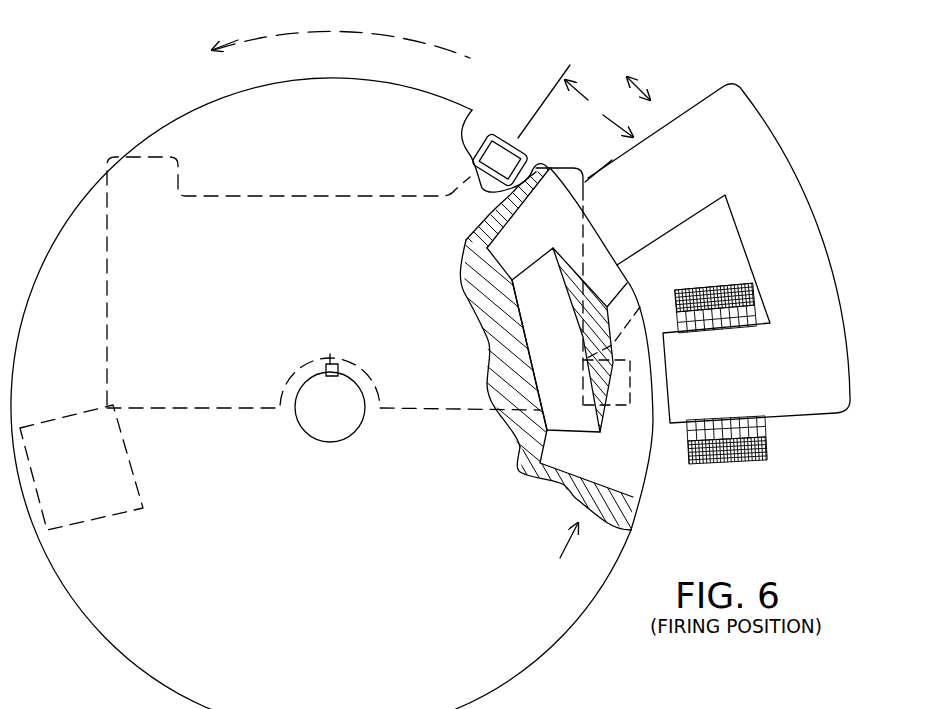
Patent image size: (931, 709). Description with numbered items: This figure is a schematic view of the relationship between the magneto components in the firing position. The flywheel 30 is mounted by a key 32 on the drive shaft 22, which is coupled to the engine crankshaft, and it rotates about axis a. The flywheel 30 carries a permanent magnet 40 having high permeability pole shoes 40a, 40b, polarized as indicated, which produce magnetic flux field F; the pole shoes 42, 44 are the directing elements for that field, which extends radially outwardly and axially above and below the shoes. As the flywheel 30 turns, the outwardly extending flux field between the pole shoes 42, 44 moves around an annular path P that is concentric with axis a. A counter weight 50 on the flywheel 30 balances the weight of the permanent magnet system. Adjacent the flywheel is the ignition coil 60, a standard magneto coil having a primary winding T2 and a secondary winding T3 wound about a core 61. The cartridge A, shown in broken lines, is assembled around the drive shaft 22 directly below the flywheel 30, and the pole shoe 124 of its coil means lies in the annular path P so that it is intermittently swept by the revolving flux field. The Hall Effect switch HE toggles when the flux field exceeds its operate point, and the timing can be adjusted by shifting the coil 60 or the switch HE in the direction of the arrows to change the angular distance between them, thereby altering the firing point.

The drive shaft 22 is at (330, 428).
The flywheel 30 is at (550, 651).
The key 32 is at (331, 356).
The permanent magnet 40 is at (540, 362).
The pole shoe 40a is at (527, 266).
The pole shoe 40b is at (574, 432).
The pole shoe 42 is at (598, 228).
The pole shoe 44 is at (643, 458).
The counter weight 50 is at (120, 513).
The ignition coil 60 is at (745, 404).
The core 61 is at (797, 206).
The pole shoe 124 is at (642, 306).
The Hall Effect switch HE is at (507, 151).
The cartridge A is at (299, 194).
The annular path P is at (337, 33).
The axis a is at (332, 406).
The primary winding T2 is at (766, 432).
The secondary winding T3 is at (770, 455).